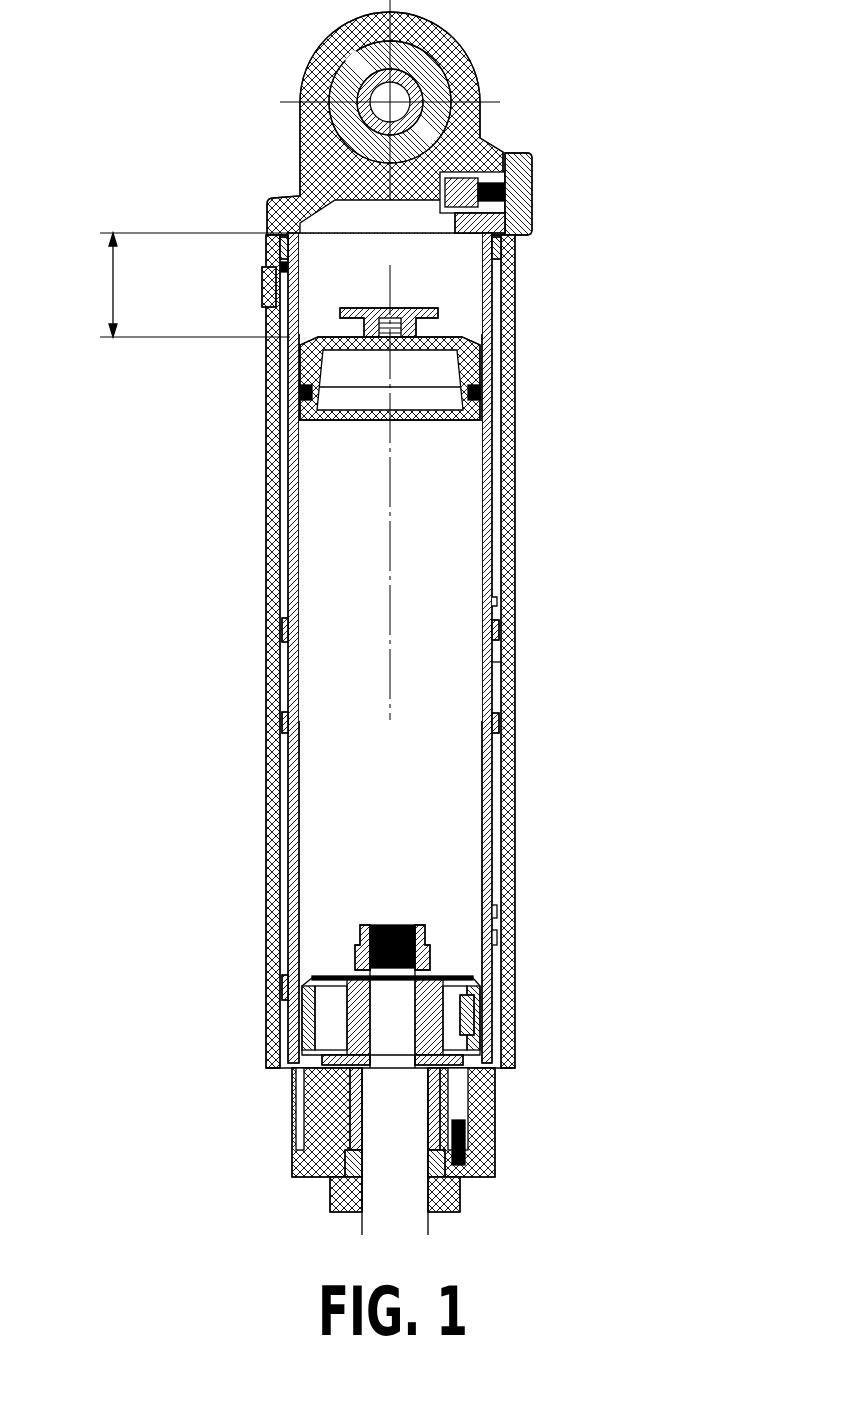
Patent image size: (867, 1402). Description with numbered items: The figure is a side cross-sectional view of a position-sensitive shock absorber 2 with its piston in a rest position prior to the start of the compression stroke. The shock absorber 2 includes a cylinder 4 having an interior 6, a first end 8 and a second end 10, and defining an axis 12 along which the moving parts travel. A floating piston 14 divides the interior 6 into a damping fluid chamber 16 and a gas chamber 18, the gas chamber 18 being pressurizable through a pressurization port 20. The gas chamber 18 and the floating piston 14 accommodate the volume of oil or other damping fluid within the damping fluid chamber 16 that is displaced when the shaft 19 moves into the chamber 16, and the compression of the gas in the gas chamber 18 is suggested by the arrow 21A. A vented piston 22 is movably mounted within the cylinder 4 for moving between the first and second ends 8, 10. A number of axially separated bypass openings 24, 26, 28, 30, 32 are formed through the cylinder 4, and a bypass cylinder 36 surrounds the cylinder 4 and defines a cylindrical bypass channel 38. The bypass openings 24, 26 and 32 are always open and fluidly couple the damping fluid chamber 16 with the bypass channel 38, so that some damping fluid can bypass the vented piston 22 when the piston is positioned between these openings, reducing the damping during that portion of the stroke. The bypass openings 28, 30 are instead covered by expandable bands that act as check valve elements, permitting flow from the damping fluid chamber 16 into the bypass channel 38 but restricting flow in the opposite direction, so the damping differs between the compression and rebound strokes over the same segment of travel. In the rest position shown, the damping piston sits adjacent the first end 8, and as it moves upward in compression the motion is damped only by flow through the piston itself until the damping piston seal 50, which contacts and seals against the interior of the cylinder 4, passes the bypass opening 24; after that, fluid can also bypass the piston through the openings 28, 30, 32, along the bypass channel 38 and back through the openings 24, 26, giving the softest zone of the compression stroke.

The position-sensitive shock absorber 2 is at (670, 119).
The cylinder 4 is at (481, 523).
The interior 6 is at (400, 849).
The first end 8 is at (292, 980).
The second end 10 is at (290, 317).
The axis 12 is at (392, 638).
The floating piston 14 is at (466, 346).
The damping fluid chamber 16 is at (468, 468).
The gas chamber 18 is at (468, 279).
The shaft 19 is at (406, 1224).
The pressurization port 20 is at (532, 183).
The arrow 21A is at (113, 231).
The vented piston 22 is at (330, 969).
The bypass opening 24 is at (492, 938).
The bypass opening 26 is at (492, 912).
The bypass opening 28 is at (490, 720).
The bypass opening 30 is at (490, 628).
The bypass opening 32 is at (486, 602).
The bypass cylinder 36 is at (503, 601).
The bypass channel 38 is at (501, 662).
The damping piston seal 50 is at (474, 1017).